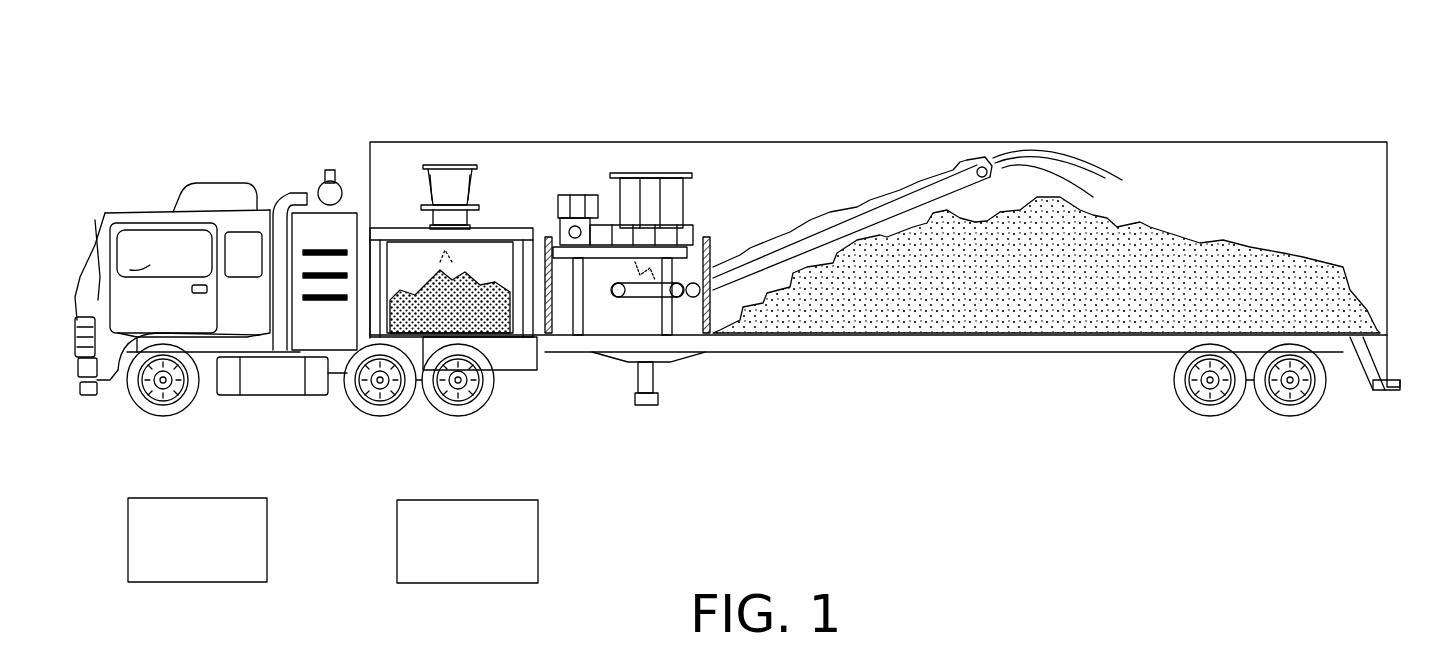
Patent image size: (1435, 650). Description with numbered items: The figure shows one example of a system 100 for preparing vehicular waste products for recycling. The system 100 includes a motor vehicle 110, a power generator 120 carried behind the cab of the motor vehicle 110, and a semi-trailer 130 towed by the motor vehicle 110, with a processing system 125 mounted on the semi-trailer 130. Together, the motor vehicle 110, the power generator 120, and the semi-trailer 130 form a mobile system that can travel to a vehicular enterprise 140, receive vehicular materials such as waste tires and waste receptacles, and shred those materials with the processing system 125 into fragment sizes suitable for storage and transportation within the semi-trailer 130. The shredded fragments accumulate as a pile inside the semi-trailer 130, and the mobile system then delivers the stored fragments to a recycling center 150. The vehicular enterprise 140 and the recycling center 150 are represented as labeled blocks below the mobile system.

The system 100 is at (522, 108).
The motor vehicle 110 is at (140, 205).
The power generator 120 is at (340, 337).
The processing system 125 is at (757, 197).
The semi-trailer 130 is at (990, 140).
The vehicular enterprise 140 is at (172, 547).
The recycling center 150 is at (440, 555).